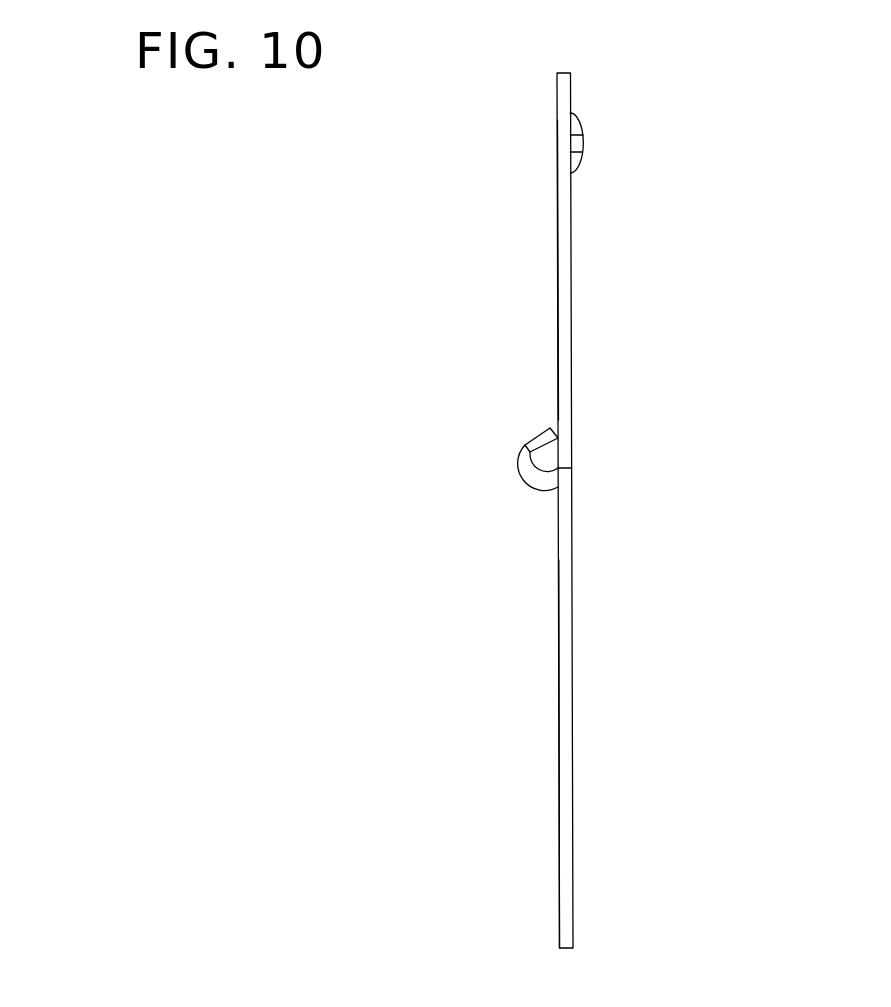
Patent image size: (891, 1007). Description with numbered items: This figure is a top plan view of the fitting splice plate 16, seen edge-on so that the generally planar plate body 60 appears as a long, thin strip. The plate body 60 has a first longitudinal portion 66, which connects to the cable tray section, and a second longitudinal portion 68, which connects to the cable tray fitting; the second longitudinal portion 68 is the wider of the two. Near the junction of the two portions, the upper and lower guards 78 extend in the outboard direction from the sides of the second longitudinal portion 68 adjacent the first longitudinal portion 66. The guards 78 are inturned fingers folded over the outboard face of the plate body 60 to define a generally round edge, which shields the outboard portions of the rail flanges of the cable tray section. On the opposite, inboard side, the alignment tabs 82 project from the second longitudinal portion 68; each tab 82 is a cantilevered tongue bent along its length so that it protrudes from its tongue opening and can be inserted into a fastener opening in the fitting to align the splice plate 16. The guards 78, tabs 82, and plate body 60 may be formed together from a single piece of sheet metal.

The fitting splice plate 16 is at (773, 160).
The plate body 60 is at (575, 510).
The first longitudinal portion 66 is at (571, 770).
The second longitudinal portion 68 is at (570, 309).
The upper and lower guards 78 is at (511, 473).
The alignment tabs 82 is at (583, 138).